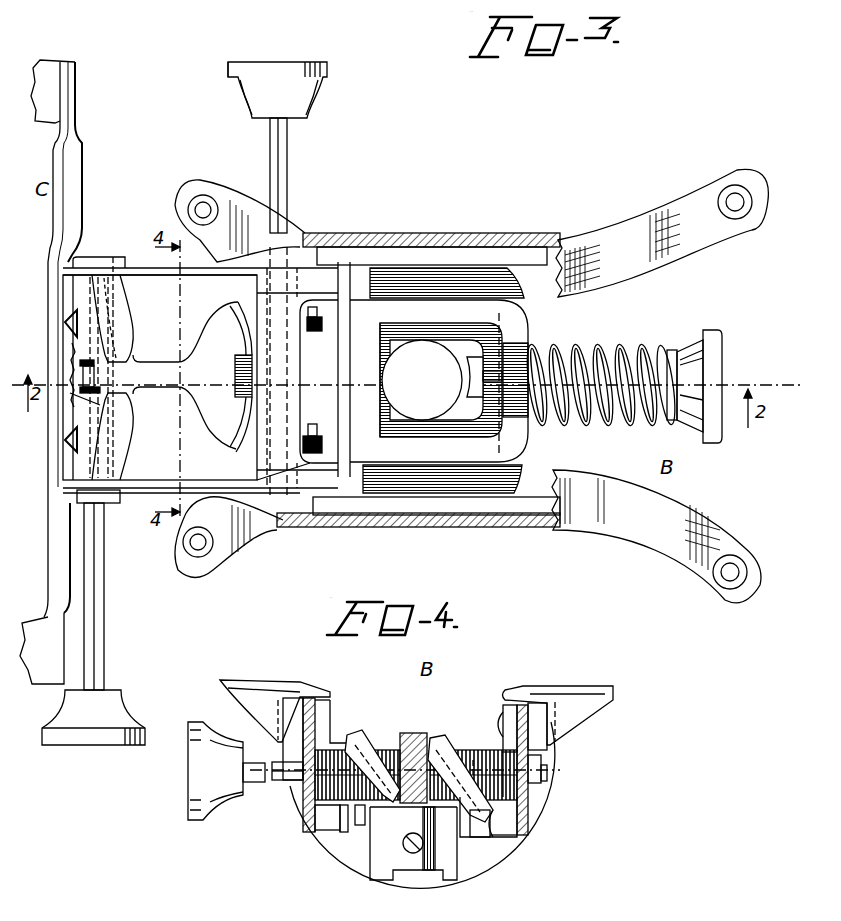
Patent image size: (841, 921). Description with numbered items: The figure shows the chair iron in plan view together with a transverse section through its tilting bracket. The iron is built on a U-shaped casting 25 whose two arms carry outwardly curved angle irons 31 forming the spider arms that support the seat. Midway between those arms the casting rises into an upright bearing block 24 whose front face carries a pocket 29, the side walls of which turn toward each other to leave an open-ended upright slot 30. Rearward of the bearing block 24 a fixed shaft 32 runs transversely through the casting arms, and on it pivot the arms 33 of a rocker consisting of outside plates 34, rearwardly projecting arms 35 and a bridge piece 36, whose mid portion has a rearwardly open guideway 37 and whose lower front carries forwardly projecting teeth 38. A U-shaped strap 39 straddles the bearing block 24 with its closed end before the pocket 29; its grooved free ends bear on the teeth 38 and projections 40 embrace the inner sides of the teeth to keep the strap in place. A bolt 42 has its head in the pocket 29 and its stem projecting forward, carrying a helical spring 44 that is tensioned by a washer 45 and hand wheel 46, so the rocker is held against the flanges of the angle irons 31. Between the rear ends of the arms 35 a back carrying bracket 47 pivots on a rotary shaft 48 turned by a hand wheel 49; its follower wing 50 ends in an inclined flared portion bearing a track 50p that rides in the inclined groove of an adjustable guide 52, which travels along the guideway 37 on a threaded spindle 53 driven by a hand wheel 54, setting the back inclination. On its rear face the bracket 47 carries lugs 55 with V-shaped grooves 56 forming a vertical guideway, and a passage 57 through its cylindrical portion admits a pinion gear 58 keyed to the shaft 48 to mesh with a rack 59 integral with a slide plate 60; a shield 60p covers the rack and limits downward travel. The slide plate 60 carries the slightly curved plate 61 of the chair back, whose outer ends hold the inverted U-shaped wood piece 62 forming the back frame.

In FIG. 3, the bearing block 24 is at (439, 381).
In FIG. 4, the bearing block 24 is at (420, 870).
In FIG. 3, the U-shaped casting 25 is at (505, 285).
In FIG. 4, the U-shaped casting 25 is at (283, 752).
In FIG. 3, the pocket 29 is at (465, 397).
In FIG. 3, the upright slot 30 is at (470, 375).
In FIG. 3, the angle irons 31 is at (612, 236).
In FIG. 4, the angle irons 31 is at (250, 682).
In FIG. 3, the fixed shaft 32 is at (323, 375).
In FIG. 3, the arms of the rocker 33 is at (345, 290).
In FIG. 4, the arms of the rocker 33 is at (500, 716).
In FIG. 3, the outside plates 34 is at (228, 276).
In FIG. 4, the outside plates 34 is at (300, 803).
In FIG. 3, the rearwardly projecting arms 35 is at (99, 251).
In FIG. 3, the bridge piece 36 is at (290, 382).
In FIG. 4, the bridge piece 36 is at (350, 797).
In FIG. 4, the guideway 37 is at (416, 765).
In FIG. 3, the teeth 38 is at (322, 318).
In FIG. 4, the teeth 38 is at (350, 827).
In FIG. 3, the U-shaped strap 39 is at (396, 442).
In FIG. 3, the projections 40 is at (312, 322).
In FIG. 4, the projections 40 is at (375, 830).
In FIG. 3, the bolt 42 is at (590, 375).
In FIG. 3, the helical spring 44 is at (615, 415).
In FIG. 3, the washer 45 is at (676, 365).
In FIG. 3, the hand wheel 46 is at (722, 356).
In FIG. 3, the back carrying bracket 47 is at (113, 262).
In FIG. 3, the rotary shaft 48 is at (104, 592).
In FIG. 3, the hand wheel 49 is at (93, 738).
In FIG. 3, the follower wing 50 is at (155, 365).
In FIG. 4, the follower wing 50 is at (418, 742).
In FIG. 4, the track 50p is at (352, 735).
In FIG. 3, the adjustable guide 52 is at (236, 362).
In FIG. 4, the adjustable guide 52 is at (408, 780).
In FIG. 3, the threaded spindle 53 is at (288, 175).
In FIG. 4, the threaded spindle 53 is at (478, 755).
In FIG. 3, the hand wheel 54 is at (322, 90).
In FIG. 4, the hand wheel 54 is at (200, 722).
In FIG. 3, the lugs 55 is at (85, 302).
In FIG. 3, the V-shaped grooves 56 is at (70, 318).
In FIG. 3, the passage 57 is at (100, 378).
In FIG. 3, the pinion gear 58 is at (105, 398).
In FIG. 3, the rack 59 is at (95, 360).
In FIG. 3, the slide plate 60 is at (70, 410).
In FIG. 3, the shield 60p is at (72, 393).
In FIG. 3, the curved plate 61 is at (82, 170).
In FIG. 3, the wood piece 62 is at (47, 64).